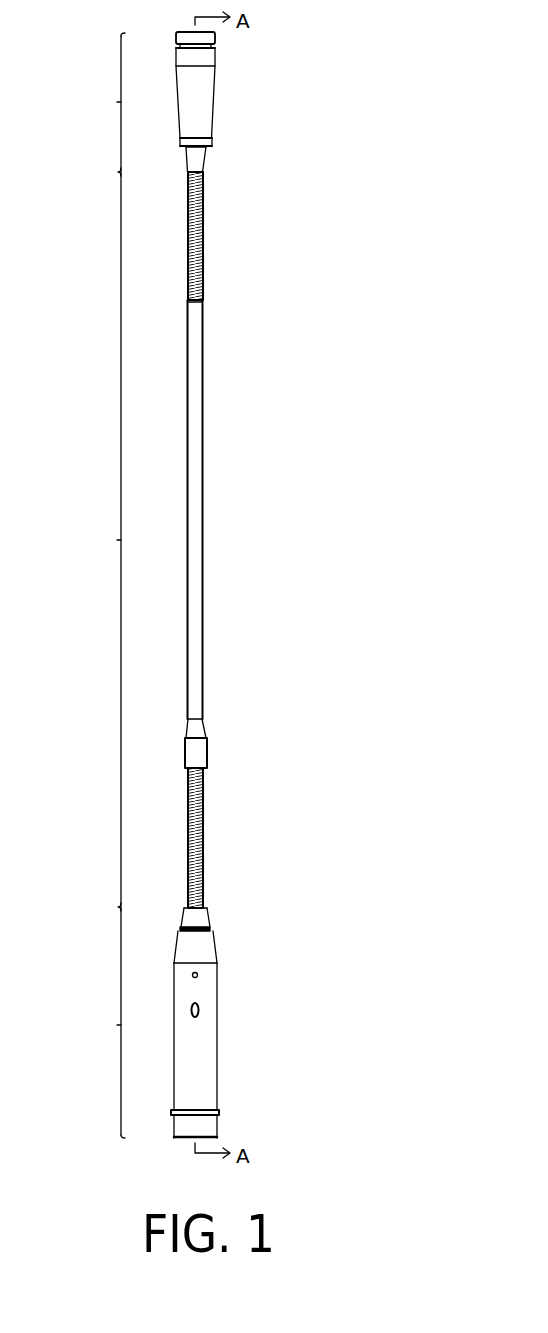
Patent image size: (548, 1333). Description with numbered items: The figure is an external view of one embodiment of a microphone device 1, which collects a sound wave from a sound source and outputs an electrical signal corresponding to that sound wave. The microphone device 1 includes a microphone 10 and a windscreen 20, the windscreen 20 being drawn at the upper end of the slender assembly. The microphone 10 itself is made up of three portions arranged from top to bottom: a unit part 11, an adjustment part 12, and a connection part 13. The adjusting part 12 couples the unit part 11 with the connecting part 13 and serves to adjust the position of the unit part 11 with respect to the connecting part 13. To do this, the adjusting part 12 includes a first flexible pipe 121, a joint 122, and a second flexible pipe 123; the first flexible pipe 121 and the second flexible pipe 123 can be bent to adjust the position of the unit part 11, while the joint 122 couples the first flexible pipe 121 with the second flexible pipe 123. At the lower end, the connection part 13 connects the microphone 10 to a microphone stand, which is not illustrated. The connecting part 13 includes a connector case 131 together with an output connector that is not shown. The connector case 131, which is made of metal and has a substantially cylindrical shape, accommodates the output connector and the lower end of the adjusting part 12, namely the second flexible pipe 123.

The microphone device 1 is at (372, 62).
The microphone 10 is at (84, 585).
The unit part 11 is at (84, 101).
The adjustment part 12 is at (82, 538).
The connection part 13 is at (84, 1024).
The windscreen 20 is at (217, 93).
The first flexible pipe 121 is at (203, 220).
The joint 122 is at (203, 522).
The second flexible pipe 123 is at (205, 833).
The connector case 131 is at (217, 1008).